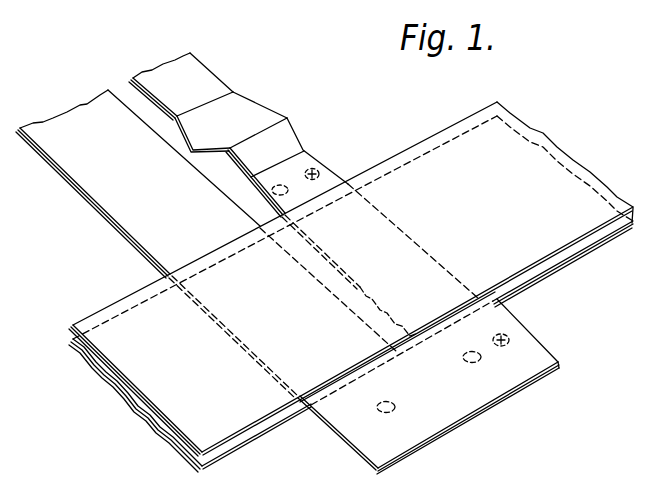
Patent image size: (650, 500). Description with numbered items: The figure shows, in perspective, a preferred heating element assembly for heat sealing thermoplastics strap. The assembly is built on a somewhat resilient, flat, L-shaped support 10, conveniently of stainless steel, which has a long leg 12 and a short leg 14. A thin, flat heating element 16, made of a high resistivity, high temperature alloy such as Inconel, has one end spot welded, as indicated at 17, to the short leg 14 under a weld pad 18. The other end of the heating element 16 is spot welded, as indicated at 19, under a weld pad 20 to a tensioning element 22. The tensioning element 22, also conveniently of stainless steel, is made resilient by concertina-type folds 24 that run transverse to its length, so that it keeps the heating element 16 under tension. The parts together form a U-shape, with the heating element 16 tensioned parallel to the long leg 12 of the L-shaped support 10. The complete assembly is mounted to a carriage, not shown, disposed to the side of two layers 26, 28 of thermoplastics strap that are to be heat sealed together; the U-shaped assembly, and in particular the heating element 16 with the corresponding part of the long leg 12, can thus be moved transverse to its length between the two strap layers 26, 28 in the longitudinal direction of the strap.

The L-shaped support 10 is at (143, 253).
The long leg 12 is at (121, 211).
The short leg 14 is at (447, 428).
The heating element 16 is at (404, 247).
The spot weld 17 is at (510, 334).
The weld pad 18 is at (500, 385).
The spot weld 19 is at (330, 152).
The weld pad 20 is at (319, 170).
The tensioning element 22 is at (285, 132).
The concertina-type folds 24 is at (232, 132).
The layer of thermoplastics strap 26 is at (442, 139).
The layer of thermoplastics strap 28 is at (578, 250).